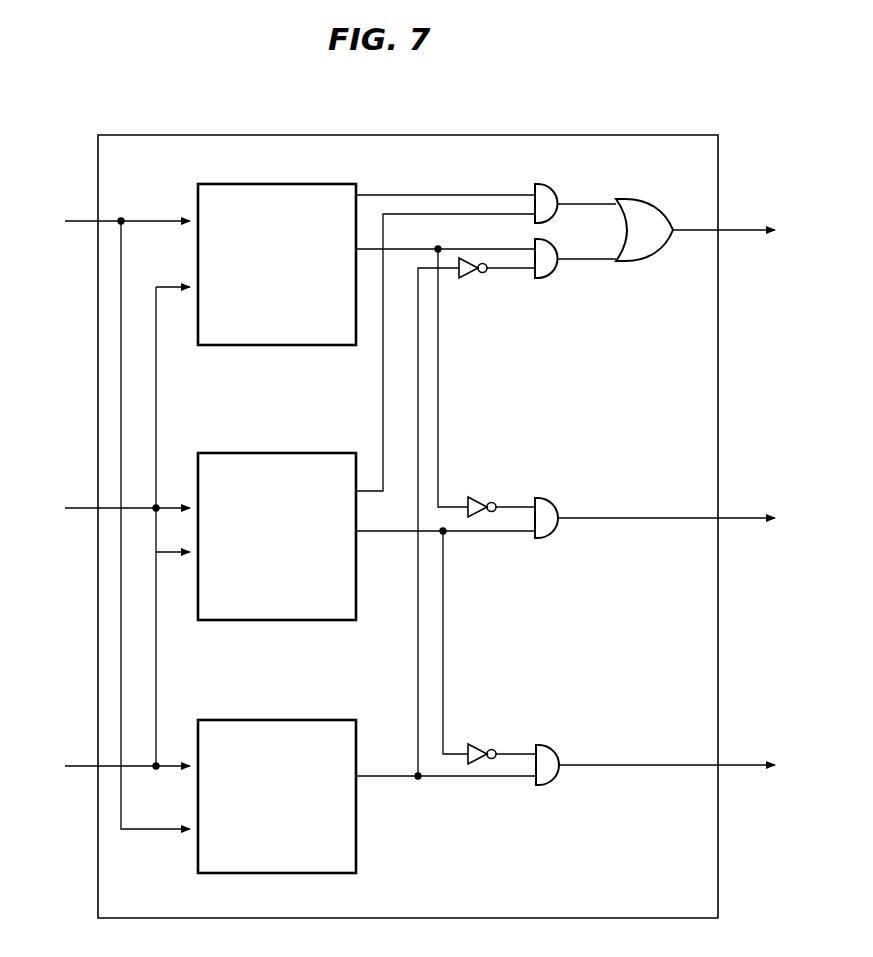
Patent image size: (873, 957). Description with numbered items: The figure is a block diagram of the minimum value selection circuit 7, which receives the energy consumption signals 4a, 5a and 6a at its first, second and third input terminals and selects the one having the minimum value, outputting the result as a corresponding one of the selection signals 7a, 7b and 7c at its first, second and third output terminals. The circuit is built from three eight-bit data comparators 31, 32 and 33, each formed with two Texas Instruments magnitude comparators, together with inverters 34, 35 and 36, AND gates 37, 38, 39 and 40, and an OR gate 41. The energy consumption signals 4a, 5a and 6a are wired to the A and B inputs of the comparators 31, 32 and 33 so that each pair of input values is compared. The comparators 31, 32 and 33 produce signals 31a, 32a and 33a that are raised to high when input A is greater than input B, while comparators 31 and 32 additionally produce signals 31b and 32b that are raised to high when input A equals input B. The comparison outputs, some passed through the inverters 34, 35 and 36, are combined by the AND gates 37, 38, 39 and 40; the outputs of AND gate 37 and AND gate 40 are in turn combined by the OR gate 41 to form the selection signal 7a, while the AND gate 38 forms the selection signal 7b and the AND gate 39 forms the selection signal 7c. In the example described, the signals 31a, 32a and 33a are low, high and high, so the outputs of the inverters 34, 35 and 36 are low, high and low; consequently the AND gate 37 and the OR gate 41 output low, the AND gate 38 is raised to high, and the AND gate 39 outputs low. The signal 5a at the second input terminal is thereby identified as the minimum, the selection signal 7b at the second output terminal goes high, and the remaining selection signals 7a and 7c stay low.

The minimum value selection circuit 7 is at (541, 135).
The energy consumption signal 4a is at (114, 513).
The energy consumption signal 5a is at (114, 526).
The energy consumption signal 6a is at (114, 759).
The data comparator 31 is at (313, 184).
The output signal 31a is at (397, 249).
The output signal 31b is at (397, 195).
The data comparator 32 is at (273, 453).
The output signal 32a is at (367, 531).
The output signal 32b is at (366, 485).
The data comparator 33 is at (312, 720).
The output signal 33a is at (376, 776).
The inverter 34 is at (473, 278).
The inverter 35 is at (478, 497).
The inverter 36 is at (470, 744).
The AND gate 37 is at (547, 239).
The AND gate 38 is at (546, 498).
The AND gate 39 is at (543, 745).
The AND gate 40 is at (547, 184).
The OR gate 41 is at (647, 199).
The selection signal 7a is at (744, 223).
The selection signal 7b is at (683, 511).
The selection signal 7c is at (682, 759).